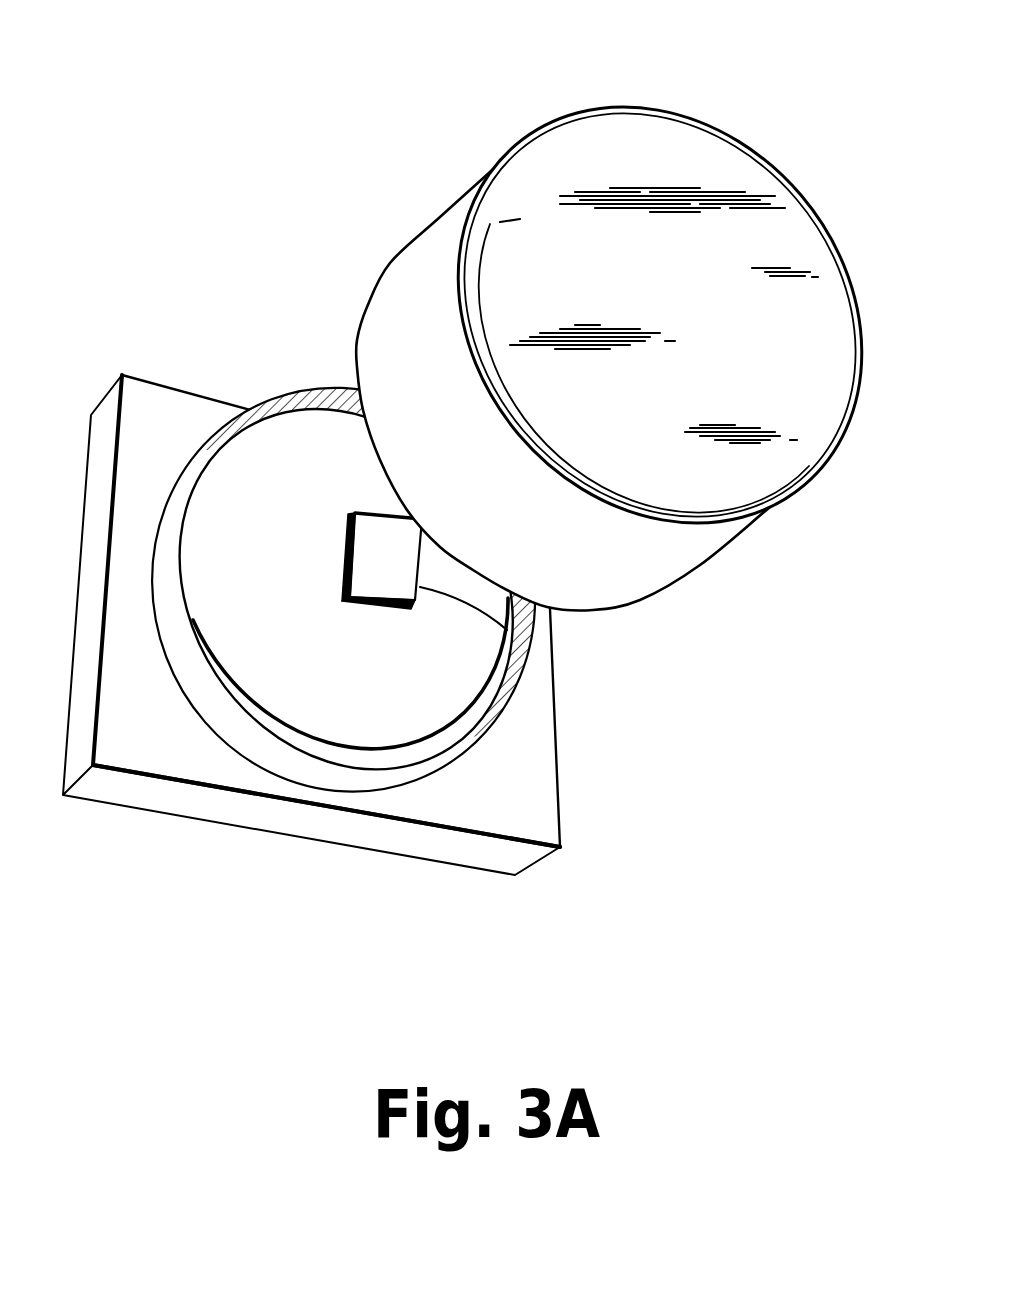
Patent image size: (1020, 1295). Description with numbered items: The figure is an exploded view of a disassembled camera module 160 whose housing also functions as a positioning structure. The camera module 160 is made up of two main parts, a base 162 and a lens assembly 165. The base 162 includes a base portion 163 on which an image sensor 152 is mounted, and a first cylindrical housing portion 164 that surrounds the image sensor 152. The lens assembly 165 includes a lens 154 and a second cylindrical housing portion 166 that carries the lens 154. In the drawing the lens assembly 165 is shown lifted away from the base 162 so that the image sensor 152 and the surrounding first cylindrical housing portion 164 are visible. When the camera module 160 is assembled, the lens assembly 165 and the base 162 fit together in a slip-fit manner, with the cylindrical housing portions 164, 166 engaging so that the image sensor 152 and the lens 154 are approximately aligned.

The camera module 160 is at (465, 87).
The lens 154 is at (763, 460).
The second cylindrical housing portion 166 is at (667, 570).
The lens assembly 165 is at (650, 364).
The image sensor 152 is at (505, 633).
The first cylindrical housing portion 164 is at (312, 767).
The base portion 163 is at (532, 813).
The base 162 is at (512, 897).